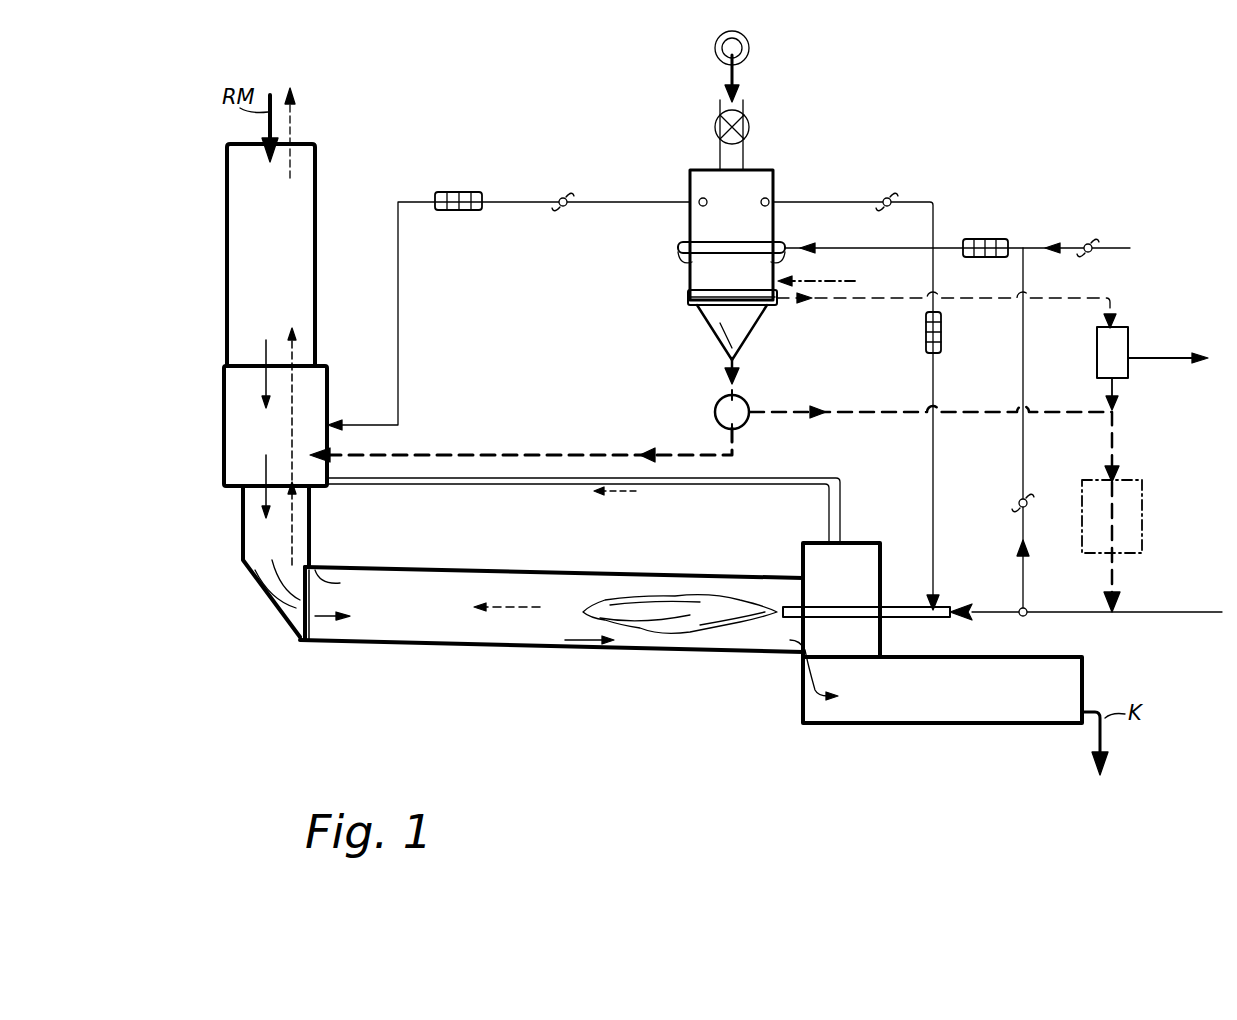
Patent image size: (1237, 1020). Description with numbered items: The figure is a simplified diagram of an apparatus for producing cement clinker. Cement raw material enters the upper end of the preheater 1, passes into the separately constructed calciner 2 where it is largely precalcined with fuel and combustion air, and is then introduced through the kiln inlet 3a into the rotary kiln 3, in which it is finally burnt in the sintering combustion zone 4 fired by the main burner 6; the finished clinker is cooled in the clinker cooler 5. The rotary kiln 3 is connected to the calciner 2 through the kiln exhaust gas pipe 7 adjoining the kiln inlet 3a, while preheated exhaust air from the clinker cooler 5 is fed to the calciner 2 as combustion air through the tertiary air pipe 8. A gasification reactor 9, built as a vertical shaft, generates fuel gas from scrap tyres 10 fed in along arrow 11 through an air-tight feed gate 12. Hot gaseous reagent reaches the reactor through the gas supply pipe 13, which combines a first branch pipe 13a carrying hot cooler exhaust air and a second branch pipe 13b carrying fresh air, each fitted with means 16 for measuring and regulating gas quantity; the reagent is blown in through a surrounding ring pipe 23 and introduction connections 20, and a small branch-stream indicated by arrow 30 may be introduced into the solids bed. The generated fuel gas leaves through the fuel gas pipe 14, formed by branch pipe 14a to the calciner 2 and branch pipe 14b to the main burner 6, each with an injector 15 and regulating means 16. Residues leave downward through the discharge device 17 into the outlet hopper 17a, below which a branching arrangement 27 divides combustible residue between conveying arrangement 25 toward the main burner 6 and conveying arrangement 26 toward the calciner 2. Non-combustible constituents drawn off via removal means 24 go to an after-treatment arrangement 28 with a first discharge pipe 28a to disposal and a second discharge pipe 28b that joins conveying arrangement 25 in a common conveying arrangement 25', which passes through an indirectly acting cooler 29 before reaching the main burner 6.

The preheater 1 is at (240, 203).
The calciner 2 is at (240, 415).
The rotary kiln 3 is at (452, 645).
The kiln inlet 3a is at (262, 585).
The sintering combustion zone 4 is at (585, 640).
The clinker cooler 5 is at (938, 718).
The main burner 6 is at (895, 604).
The kiln exhaust gas pipe 7 is at (255, 540).
The tertiary air pipe 8 is at (528, 488).
The gasification reactor 9 is at (778, 188).
The scrap tyres 10 is at (750, 48).
The arrow 11 is at (740, 76).
The feed gate 12 is at (748, 128).
The gas supply pipe 13 is at (945, 246).
The first branch pipe 13a is at (1025, 370).
The second branch pipe 13b is at (1115, 246).
The fuel gas pipe 14 is at (584, 210).
The fuel gas branch pipe 14a is at (610, 200).
The fuel gas branch pipe 14b is at (850, 200).
The injector 15 is at (454, 192).
The means for measuring and regulating the quantity of gas 16 is at (564, 198).
The discharge device 17 is at (712, 320).
The outlet hopper 17a is at (720, 330).
The gasification agent introduction connections 20 is at (678, 255).
The ring pipe 23 is at (676, 247).
The removal means 24 is at (832, 302).
The conveying arrangement 25 is at (934, 427).
The common conveying arrangement 25' is at (1152, 516).
The conveying arrangement 26 is at (512, 450).
The distribution or branching arrangement 27 is at (716, 408).
The after-treatment arrangement 28 is at (1134, 338).
The first discharge pipe 28a is at (1188, 357).
The second discharge pipe 28b is at (1116, 386).
The indirectly acting cooler 29 is at (1135, 500).
The arrow 30 is at (850, 282).